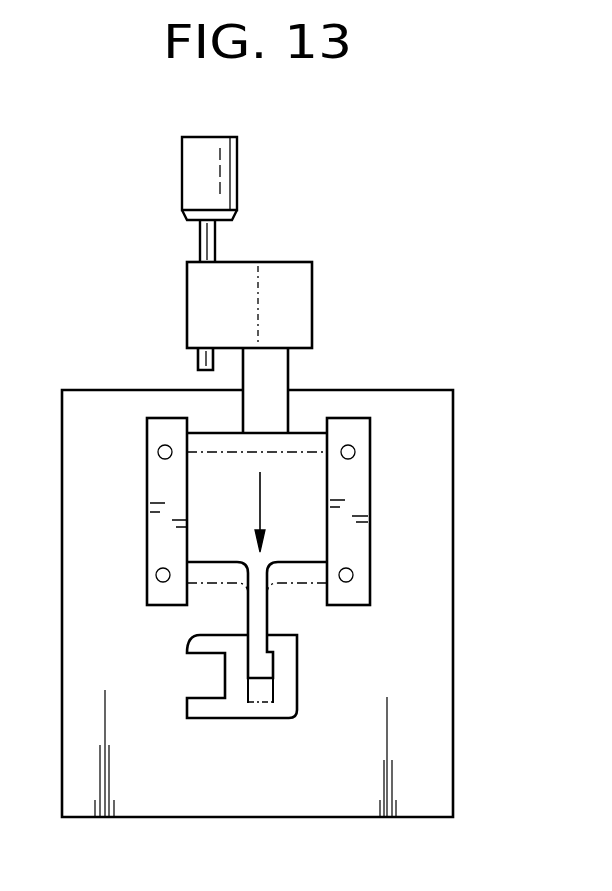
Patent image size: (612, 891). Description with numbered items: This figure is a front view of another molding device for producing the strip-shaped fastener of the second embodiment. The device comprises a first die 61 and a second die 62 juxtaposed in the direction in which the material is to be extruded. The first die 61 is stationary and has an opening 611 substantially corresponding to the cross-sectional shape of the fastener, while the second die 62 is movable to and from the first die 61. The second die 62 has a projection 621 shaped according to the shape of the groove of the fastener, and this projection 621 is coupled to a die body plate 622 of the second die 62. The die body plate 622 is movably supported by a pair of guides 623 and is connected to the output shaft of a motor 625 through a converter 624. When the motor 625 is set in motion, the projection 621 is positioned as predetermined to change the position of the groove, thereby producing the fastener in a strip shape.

The first die 61 is at (415, 752).
The opening 611 is at (243, 713).
The second die 62 is at (270, 610).
The projection 621 is at (262, 663).
The die body plate 622 is at (208, 550).
The guides 623 is at (168, 490).
The converter 624 is at (288, 288).
The motor 625 is at (218, 178).